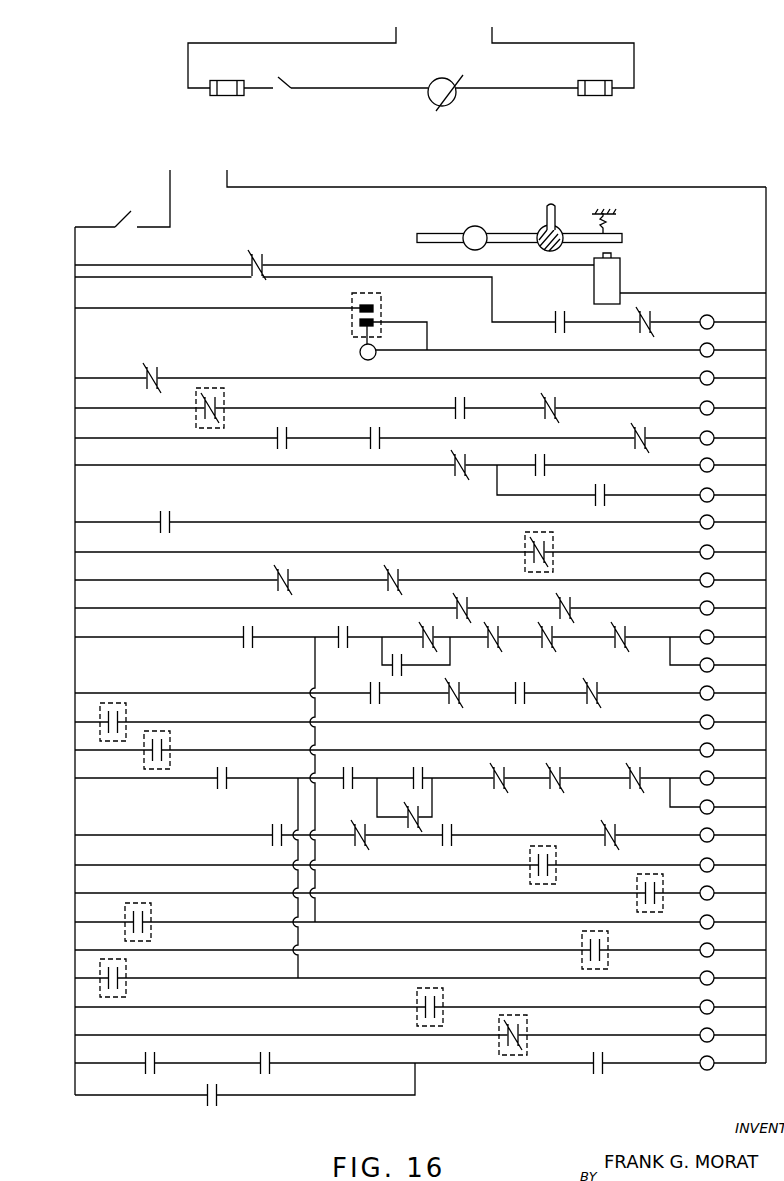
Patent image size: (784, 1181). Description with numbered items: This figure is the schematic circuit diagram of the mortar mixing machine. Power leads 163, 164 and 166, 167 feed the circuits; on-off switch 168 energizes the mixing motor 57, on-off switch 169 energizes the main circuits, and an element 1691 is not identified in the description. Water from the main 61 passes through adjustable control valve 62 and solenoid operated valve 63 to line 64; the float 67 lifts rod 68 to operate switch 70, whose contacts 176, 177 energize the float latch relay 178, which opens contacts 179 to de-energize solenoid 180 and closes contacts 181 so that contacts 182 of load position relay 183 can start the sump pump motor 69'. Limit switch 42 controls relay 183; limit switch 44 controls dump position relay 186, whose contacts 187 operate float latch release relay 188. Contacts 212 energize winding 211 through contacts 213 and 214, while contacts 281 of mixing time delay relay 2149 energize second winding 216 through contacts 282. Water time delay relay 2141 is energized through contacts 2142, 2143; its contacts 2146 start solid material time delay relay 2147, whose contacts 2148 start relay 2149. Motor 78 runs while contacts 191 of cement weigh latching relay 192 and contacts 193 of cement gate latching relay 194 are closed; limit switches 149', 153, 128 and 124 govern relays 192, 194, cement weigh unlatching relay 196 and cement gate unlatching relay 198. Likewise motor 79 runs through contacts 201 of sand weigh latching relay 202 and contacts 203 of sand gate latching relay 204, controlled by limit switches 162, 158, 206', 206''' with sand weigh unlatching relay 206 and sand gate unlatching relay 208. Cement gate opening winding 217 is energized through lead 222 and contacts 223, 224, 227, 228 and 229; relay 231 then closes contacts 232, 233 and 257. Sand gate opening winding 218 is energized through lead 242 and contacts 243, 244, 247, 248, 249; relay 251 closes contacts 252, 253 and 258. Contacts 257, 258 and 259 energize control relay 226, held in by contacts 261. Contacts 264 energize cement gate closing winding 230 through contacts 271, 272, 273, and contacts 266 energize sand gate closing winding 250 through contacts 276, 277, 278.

The electric power lead 163 is at (262, 43).
The electric power lead 164 is at (548, 43).
The on-off switch 168 is at (283, 80).
The mixing motor 57 is at (455, 88).
The electric power lead 167 is at (287, 188).
The electric power lead 166 is at (171, 208).
The on-off switch 169 is at (95, 223).
The supply conductor 1691 is at (72, 266).
The main 61 is at (432, 233).
The adjustable control valve 62 is at (474, 226).
The solenoid operated valve 63 is at (542, 226).
The line 64 is at (557, 219).
The switch 70 is at (381, 301).
The switch contact 176 is at (357, 306).
The switch contact 177 is at (355, 324).
The upright rod 68 is at (360, 347).
The float 67 is at (378, 354).
The solenoid 180 is at (614, 281).
The normally closed switch contacts 179 is at (260, 253).
The contacts 181 is at (555, 332).
The contacts 182 is at (640, 330).
The sump pump motor 69' is at (716, 331).
The float latch relay 178 is at (710, 356).
The normally closed contacts 187 is at (150, 388).
The float latch release relay 188 is at (710, 384).
The dumping position limit switch 44 is at (197, 425).
The contacts 281 is at (453, 420).
The normally closed contacts 282 is at (545, 420).
The second winding 216 is at (710, 414).
The normally open contacts 213 is at (276, 445).
The contacts 212 is at (375, 447).
The normally closed contacts 214 is at (637, 446).
The winding 211 is at (710, 444).
The contacts 2142 is at (459, 479).
The normally open contacts 2143 is at (548, 482).
The water time delay relay 2141 is at (710, 471).
The contacts 2146 is at (590, 502).
The solid material time delay relay 2147 is at (710, 501).
The contacts 2148 is at (167, 532).
The mixing time delay relay 2149 is at (710, 528).
The dump position relay 186 is at (710, 558).
The normally closed contacts 191 is at (278, 588).
The normally closed contacts 193 is at (392, 588).
The motor 78 is at (710, 586).
The normally closed contacts 201 is at (469, 599).
The normally closed contacts 203 is at (570, 599).
The motor 79 is at (710, 614).
The contacts 232 is at (243, 651).
The contacts 223 is at (336, 628).
The normally closed contacts 224 is at (419, 626).
The contacts 233 is at (395, 680).
The normally closed contacts 227 is at (498, 650).
The normally closed contacts 228 is at (562, 650).
The normally closed contacts 229 is at (628, 650).
The cement gate opening winding 217 is at (710, 643).
The relay 231 is at (710, 671).
The normally open contacts 271 is at (375, 700).
The normally closed contacts 272 is at (455, 700).
The contacts 264 is at (527, 700).
The normally closed contacts 273 is at (598, 698).
The cement gate closing winding 230 is at (710, 699).
The limit switch 128 is at (128, 710).
The cement gate latching relay 194 is at (710, 728).
The limit switch 124 is at (150, 757).
The cement gate unlatching relay 198 is at (710, 756).
The contacts 252 is at (218, 788).
The contacts 243 is at (366, 790).
The contacts 253 is at (420, 774).
The normally closed contacts 244 is at (415, 812).
The normally closed contacts 247 is at (503, 792).
The normally closed contacts 248 is at (561, 792).
The normally closed contacts 249 is at (638, 792).
The relay 251 is at (710, 784).
The sand gate opening winding 218 is at (702, 811).
The normally open contacts 276 is at (276, 844).
The normally closed contacts 277 is at (365, 846).
The contacts 266 is at (456, 848).
The normally closed contacts 278 is at (615, 844).
The sand gate closing winding 250 is at (710, 841).
The sand gate open limit switch 206' is at (514, 868).
The sand gate latching relay 204 is at (710, 871).
The limit switch 206''' is at (613, 897).
The sand gate unlatching relay 208 is at (710, 899).
The limit switch 149' is at (172, 926).
The cement weigh latching relay 192 is at (710, 928).
The limit switch 153 is at (582, 958).
The cement weigh unlatching relay 196 is at (710, 956).
The limit switch 162 is at (127, 985).
The sand weigh latching relay 202 is at (710, 984).
The limit switch 158 is at (418, 1012).
The sand weigh unlatching relay 206 is at (733, 1018).
The loading position limit switch 42 is at (500, 1040).
The load position relay 183 is at (710, 1041).
The contacts 257 is at (148, 1073).
The contacts 258 is at (270, 1073).
The normally open contacts 259 is at (594, 1075).
The control relay 226 is at (710, 1069).
The normally open hold-in contacts 261 is at (210, 1105).
The lead 222 is at (320, 745).
The lead 242 is at (293, 906).